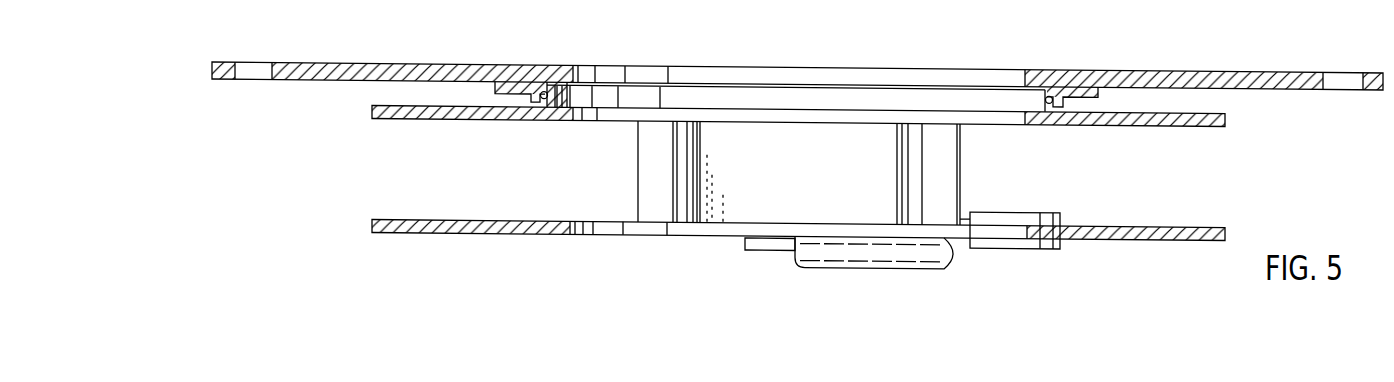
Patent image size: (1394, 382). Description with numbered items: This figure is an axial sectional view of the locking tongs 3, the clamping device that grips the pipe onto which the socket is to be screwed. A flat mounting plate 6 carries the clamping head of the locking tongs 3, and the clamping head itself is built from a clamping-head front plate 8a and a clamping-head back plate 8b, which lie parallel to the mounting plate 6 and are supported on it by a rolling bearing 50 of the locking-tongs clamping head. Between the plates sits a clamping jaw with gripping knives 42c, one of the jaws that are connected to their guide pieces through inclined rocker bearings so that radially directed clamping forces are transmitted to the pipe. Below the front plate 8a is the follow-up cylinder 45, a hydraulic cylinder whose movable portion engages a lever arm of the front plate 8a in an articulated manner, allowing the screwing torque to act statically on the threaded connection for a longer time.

The locking tongs 3 is at (563, 245).
The mounting plate 6 is at (1378, 73).
The clamping-head front plate 8a is at (1106, 238).
The clamping-head back plate 8b is at (1226, 120).
The clamping jaw with gripping knives 42c is at (673, 180).
The follow-up cylinder 45 is at (865, 267).
The rolling bearing 50 is at (546, 91).